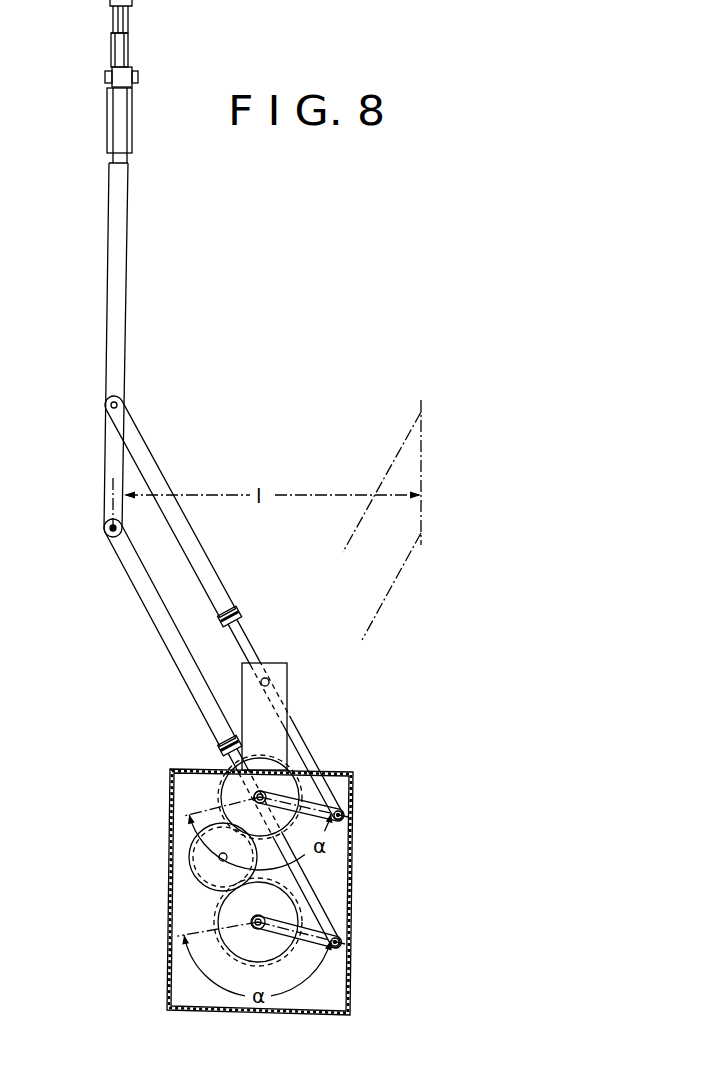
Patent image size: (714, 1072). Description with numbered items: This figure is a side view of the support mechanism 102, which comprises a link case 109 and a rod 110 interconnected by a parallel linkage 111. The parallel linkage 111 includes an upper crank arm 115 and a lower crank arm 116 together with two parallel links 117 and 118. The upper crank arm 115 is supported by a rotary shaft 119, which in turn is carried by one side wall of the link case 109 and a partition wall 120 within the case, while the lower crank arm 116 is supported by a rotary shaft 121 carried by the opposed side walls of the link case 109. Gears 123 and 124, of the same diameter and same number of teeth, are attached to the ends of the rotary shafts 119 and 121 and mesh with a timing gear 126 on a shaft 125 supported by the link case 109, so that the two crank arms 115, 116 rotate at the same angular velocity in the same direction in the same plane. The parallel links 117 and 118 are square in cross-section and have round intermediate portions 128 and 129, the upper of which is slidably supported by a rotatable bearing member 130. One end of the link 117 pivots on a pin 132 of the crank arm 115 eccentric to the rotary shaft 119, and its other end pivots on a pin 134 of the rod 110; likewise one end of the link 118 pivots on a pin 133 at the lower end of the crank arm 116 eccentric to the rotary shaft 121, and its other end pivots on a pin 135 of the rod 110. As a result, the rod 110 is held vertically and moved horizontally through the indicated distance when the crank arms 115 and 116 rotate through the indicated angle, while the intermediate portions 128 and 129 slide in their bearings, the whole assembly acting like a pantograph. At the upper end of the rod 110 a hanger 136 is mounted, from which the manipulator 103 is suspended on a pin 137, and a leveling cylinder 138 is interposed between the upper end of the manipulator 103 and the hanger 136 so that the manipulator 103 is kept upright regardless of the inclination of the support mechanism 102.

The support mechanism 102 is at (113, 350).
The manipulator 103 is at (122, 142).
The link case 109 is at (167, 984).
The rod 110 is at (108, 250).
The parallel linkage 111 is at (223, 733).
The upper crank arm 115 is at (345, 790).
The lower crank arm 116 is at (315, 928).
The parallel link 117 is at (225, 684).
The parallel link 118 is at (168, 631).
The rotary shaft 119 is at (238, 796).
The partition wall 120 is at (314, 770).
The rotary shaft 121 is at (258, 915).
The gear 123 is at (284, 716).
The gear 124 is at (246, 950).
The shaft 125 is at (212, 884).
The timing gear 126 is at (190, 871).
The round intermediate portion 128 is at (256, 666).
The round intermediate portion 129 is at (230, 745).
The rotatable bearing member 130 is at (271, 681).
The pin 132 is at (342, 820).
The pin 133 is at (342, 948).
The pin 134 is at (109, 405).
The pin 135 is at (108, 528).
The hanger 136 is at (107, 120).
The pin 137 is at (138, 78).
The leveling cylinder 138 is at (112, 47).